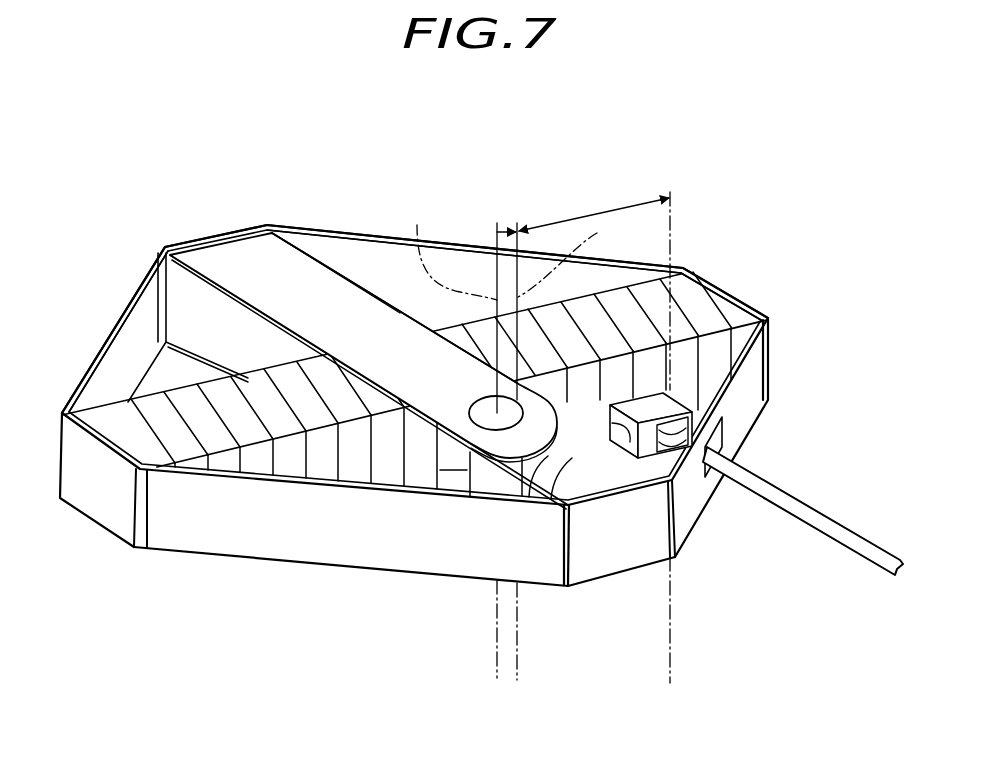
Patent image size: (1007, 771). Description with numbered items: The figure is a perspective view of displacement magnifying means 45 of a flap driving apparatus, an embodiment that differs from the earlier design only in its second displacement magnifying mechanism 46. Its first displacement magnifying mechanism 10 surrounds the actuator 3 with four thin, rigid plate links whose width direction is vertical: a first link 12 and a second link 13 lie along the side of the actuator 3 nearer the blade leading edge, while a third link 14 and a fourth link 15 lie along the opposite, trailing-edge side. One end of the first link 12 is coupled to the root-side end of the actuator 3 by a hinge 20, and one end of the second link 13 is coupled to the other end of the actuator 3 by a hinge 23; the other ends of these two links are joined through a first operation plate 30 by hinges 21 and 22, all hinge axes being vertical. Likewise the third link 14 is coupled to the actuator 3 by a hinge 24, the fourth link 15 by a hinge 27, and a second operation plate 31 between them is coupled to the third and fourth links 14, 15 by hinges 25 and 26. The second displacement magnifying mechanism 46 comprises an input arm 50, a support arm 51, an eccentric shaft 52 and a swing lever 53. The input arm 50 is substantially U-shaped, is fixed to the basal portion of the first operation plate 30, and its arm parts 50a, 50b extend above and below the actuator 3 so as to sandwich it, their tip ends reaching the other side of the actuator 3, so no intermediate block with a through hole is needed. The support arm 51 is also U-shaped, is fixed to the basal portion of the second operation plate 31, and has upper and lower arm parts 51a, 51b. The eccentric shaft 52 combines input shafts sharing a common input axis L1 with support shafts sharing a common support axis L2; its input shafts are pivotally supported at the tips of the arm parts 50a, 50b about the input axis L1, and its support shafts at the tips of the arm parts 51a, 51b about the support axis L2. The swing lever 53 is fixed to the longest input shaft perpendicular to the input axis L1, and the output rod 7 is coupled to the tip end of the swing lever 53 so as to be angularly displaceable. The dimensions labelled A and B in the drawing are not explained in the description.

The actuator 3 is at (232, 415).
The output rod 7 is at (830, 512).
The first displacement magnifying mechanism 10 is at (145, 273).
The first link 12 is at (132, 307).
The second link 13 is at (467, 247).
The third link 14 is at (381, 552).
The fourth link 15 is at (712, 478).
The hinge 20 is at (62, 408).
The hinge 21 is at (161, 248).
The hinge 22 is at (282, 232).
The hinge 23 is at (683, 268).
The hinge 24 is at (138, 540).
The hinge 25 is at (575, 500).
The hinge 26 is at (676, 560).
The hinge 27 is at (770, 385).
The first operation plate 30 is at (184, 237).
The second operation plate 31 is at (630, 557).
The displacement magnifying means 45 is at (159, 154).
The second displacement magnifying mechanism 46 is at (292, 260).
The input arm 50 is at (323, 297).
The upper arm part 50a is at (358, 310).
The lower arm part 50b is at (210, 352).
The support arm 51 is at (540, 472).
The upper arm part 51a is at (533, 490).
The lower arm part 51b is at (565, 480).
The eccentric shaft 52 is at (487, 472).
The swing lever 53 is at (619, 448).
The distance A is at (504, 228).
The distance B is at (612, 212).
The input axis L1 is at (452, 241).
The support axis L2 is at (579, 255).